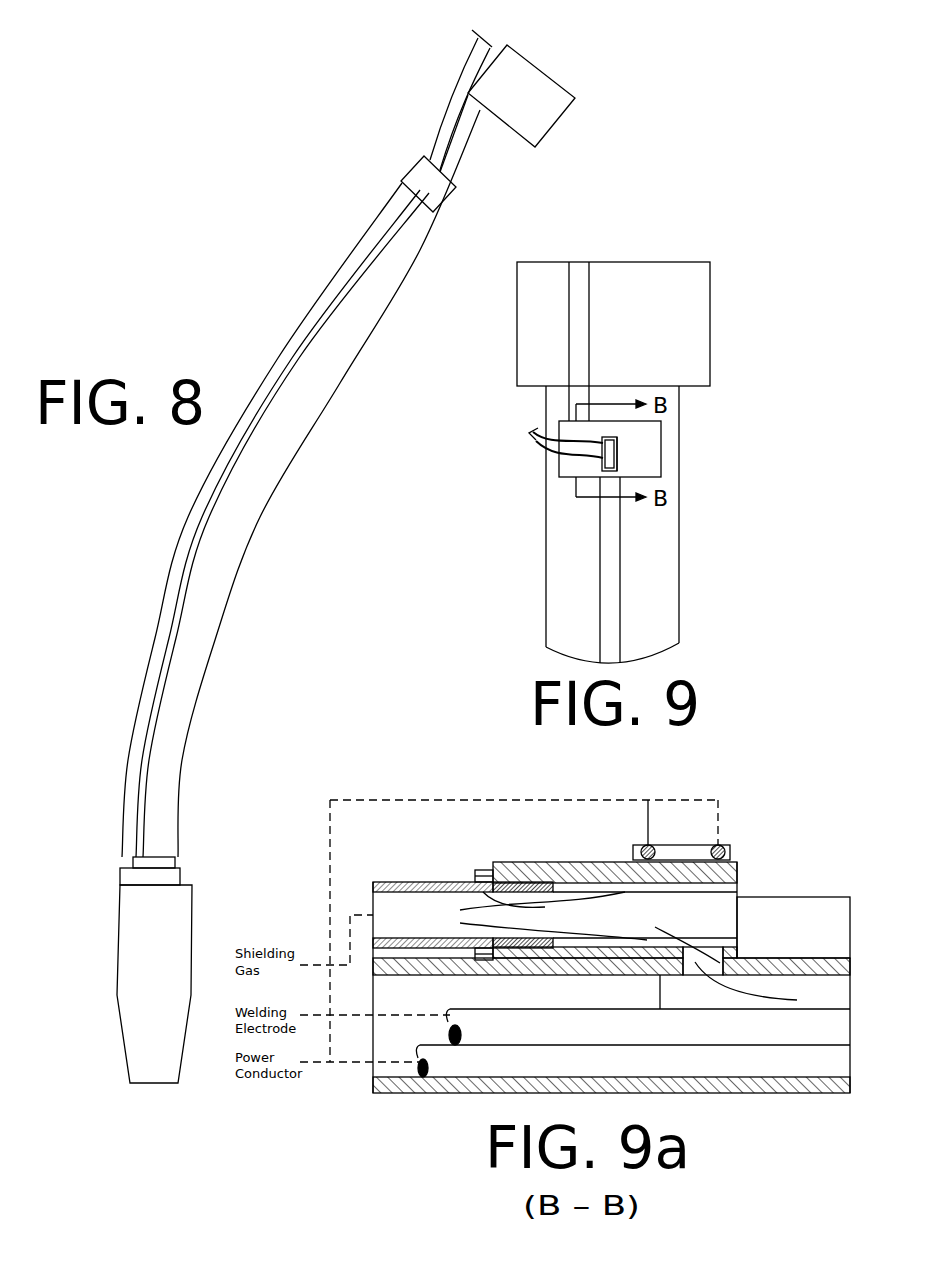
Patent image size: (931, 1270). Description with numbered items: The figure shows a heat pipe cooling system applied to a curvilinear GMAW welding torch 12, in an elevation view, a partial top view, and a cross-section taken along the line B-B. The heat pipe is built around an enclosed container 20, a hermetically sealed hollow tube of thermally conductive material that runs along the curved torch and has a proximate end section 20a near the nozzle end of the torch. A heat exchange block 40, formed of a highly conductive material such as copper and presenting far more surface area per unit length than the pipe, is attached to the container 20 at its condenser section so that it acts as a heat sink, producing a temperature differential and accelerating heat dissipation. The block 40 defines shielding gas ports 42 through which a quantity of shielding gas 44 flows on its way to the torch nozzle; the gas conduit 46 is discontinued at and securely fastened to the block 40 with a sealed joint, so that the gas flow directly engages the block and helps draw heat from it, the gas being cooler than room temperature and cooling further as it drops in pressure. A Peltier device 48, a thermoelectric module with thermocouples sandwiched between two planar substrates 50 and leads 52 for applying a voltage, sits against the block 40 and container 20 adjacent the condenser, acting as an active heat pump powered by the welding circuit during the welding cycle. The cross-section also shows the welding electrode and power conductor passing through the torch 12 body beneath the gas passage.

In FIG. 9, the welding torch 12 is at (575, 637).
In FIG. 9A, the welding torch 12 is at (810, 1037).
In FIG. 8, the enclosed container 20 is at (322, 285).
In FIG. 9, the enclosed container 20 is at (607, 568).
In FIG. 9A, the enclosed container 20 is at (812, 942).
In FIG. 8, the proximate end section 20a is at (120, 857).
In FIG. 8, the heat exchange block 40 is at (440, 205).
In FIG. 9, the heat exchange block 40 is at (650, 437).
In FIG. 9A, the heat exchange block 40 is at (558, 862).
In FIG. 9A, the shielding gas port 42 is at (700, 911).
In FIG. 9A, the shielding gas 44 is at (473, 880).
In FIG. 8, the gas conduit 46 is at (456, 88).
In FIG. 9, the gas conduit 46 is at (582, 337).
In FIG. 9A, the gas conduit 46 is at (407, 882).
In FIG. 9, the Peltier device 48 is at (624, 463).
In FIG. 9A, the Peltier device 48 is at (703, 845).
In FIG. 9, the planar substrates 50 is at (603, 467).
In FIG. 9, the leads 52 is at (567, 449).